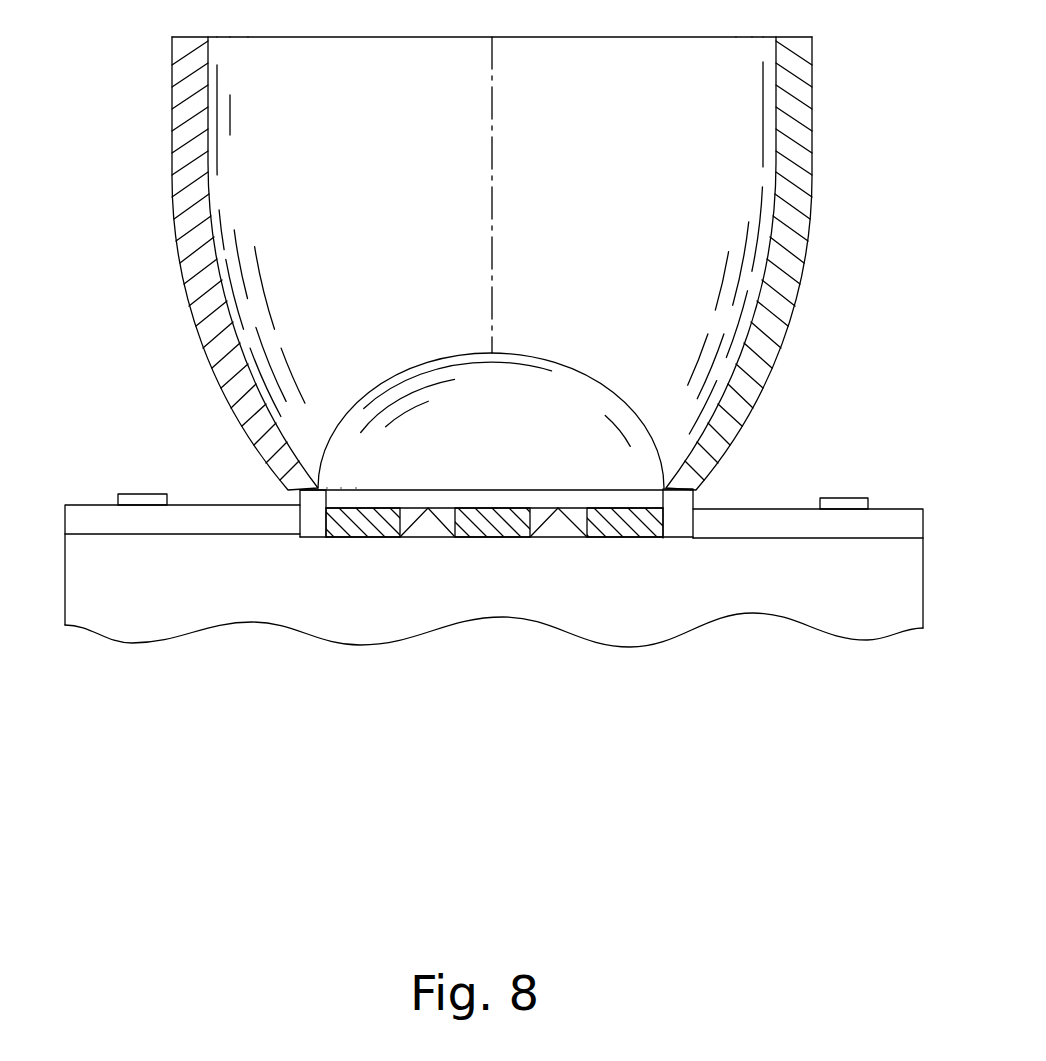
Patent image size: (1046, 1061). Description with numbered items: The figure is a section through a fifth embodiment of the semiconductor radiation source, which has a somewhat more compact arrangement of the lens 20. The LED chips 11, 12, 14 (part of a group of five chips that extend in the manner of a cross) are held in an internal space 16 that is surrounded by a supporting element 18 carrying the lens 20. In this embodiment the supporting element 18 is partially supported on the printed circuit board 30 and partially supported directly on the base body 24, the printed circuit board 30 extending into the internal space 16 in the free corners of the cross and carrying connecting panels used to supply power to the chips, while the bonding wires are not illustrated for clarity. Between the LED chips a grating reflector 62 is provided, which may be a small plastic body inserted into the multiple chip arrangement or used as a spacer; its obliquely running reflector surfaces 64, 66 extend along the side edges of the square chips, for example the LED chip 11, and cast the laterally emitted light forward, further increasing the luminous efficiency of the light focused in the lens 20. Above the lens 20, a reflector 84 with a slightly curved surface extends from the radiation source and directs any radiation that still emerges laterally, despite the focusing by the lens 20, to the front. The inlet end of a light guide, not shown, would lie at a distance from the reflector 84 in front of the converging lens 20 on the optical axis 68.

The reflector 84 is at (790, 203).
The optical axis 68 is at (495, 234).
The lens 20 is at (506, 420).
The base body 24 is at (141, 619).
The printed circuit board 30 is at (847, 506).
The internal space 16 is at (337, 497).
The supporting element 18 is at (684, 512).
The LED chip 12 is at (363, 524).
The LED chip 11 is at (498, 524).
The LED chip 14 is at (622, 524).
The grating reflector 62 is at (431, 524).
The reflector surface 64 is at (549, 511).
The reflector surface 66 is at (567, 511).